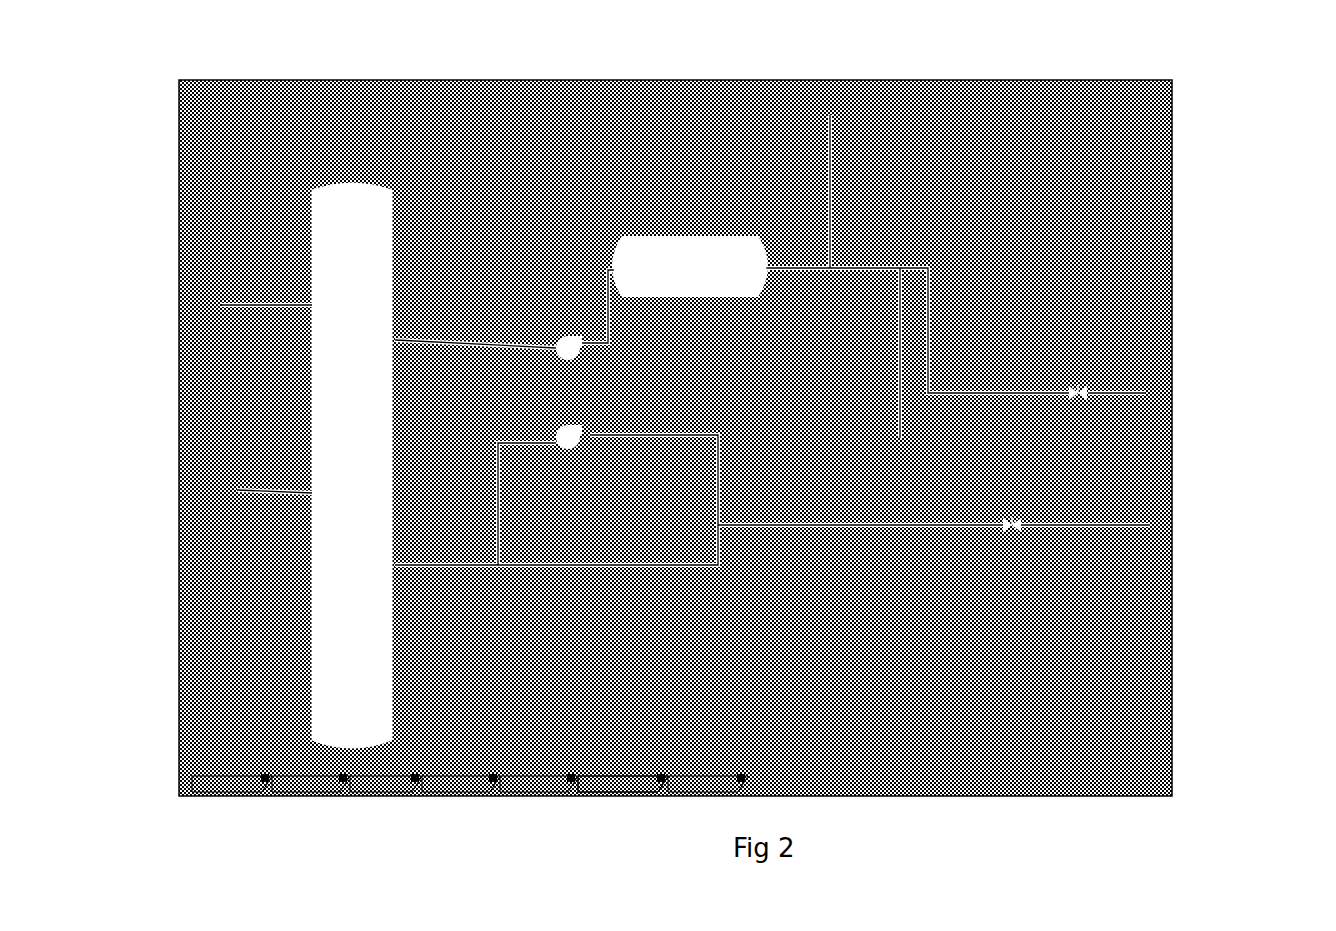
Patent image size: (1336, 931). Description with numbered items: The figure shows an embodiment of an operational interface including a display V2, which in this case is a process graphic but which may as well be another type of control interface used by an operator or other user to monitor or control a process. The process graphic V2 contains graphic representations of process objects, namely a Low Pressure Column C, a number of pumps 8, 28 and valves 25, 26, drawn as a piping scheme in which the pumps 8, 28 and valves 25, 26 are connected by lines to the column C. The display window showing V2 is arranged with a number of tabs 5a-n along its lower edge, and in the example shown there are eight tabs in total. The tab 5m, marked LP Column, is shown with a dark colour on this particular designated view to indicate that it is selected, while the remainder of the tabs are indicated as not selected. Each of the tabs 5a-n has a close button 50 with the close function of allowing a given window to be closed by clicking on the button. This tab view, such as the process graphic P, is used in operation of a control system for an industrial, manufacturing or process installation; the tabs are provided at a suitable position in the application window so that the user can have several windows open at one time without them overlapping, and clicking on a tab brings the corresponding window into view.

The display V2 is at (734, 423).
The process graphic P is at (675, 471).
The Low Pressure Column C is at (338, 232).
The pump 8 is at (593, 360).
The pump 28 is at (593, 445).
The valve 25 is at (1118, 378).
The valve 26 is at (1047, 532).
The tabs 5a-n is at (463, 818).
The tab 5m is at (502, 777).
The close button 50 is at (587, 777).